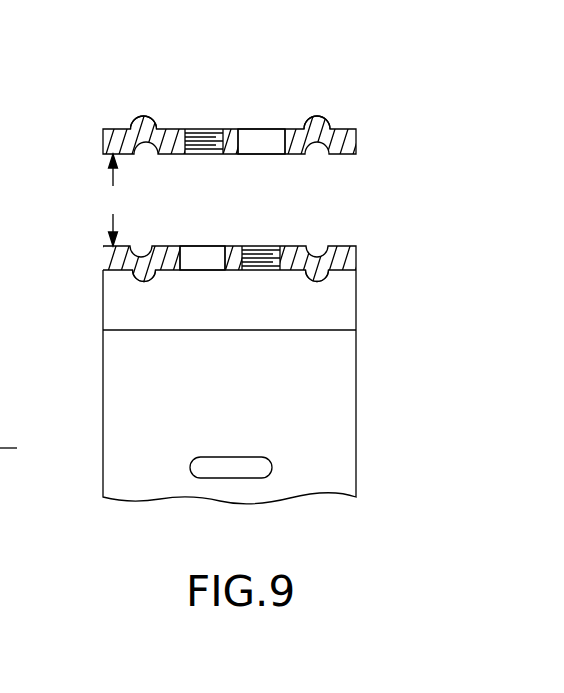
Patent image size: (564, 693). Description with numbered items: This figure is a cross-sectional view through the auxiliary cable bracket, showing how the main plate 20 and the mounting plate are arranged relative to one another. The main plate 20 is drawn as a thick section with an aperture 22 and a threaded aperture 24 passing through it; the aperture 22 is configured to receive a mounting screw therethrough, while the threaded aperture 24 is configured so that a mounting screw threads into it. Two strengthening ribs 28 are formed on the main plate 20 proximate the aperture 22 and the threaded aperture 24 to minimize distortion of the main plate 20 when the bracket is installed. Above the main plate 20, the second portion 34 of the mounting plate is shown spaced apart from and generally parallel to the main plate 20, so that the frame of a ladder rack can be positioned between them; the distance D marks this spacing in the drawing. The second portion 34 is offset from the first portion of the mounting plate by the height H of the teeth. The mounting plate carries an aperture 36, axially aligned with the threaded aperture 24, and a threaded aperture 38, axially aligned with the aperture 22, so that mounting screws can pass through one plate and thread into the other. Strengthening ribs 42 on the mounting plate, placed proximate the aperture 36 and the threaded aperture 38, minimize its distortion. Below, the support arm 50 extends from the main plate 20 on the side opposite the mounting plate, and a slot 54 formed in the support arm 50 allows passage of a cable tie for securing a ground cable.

The main plate 20 is at (103, 258).
The aperture 22 is at (203, 248).
The threaded aperture 24 is at (262, 247).
The strengthening ribs 28 is at (140, 282).
The second portion 34 is at (357, 143).
The aperture 36 is at (264, 138).
The threaded aperture 38 is at (203, 128).
The strengthening ribs 42 is at (147, 117).
The support arm 50 is at (293, 407).
The slots 54 is at (262, 473).
The distance D is at (113, 200).
The height of teeth H is at (18, 450).